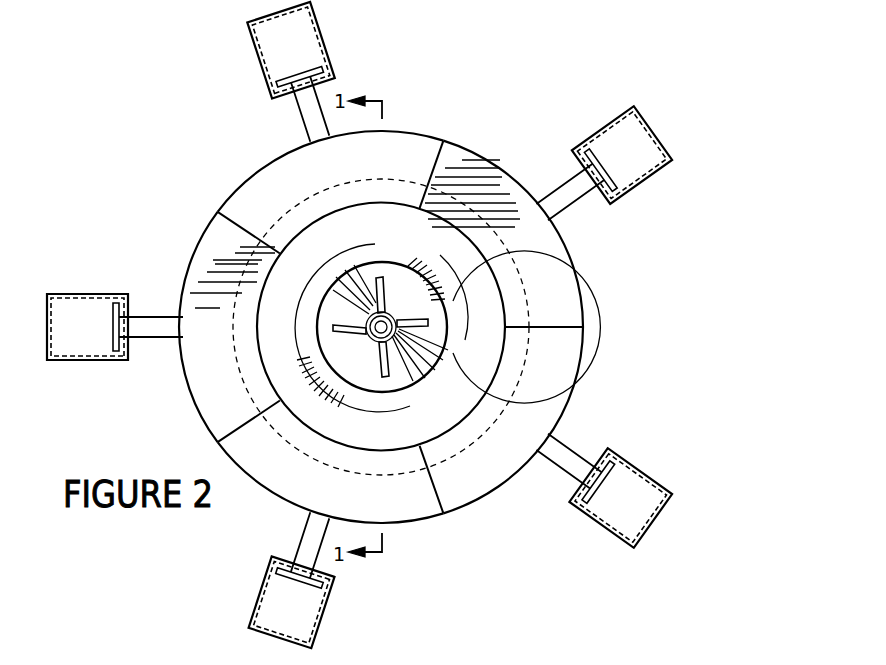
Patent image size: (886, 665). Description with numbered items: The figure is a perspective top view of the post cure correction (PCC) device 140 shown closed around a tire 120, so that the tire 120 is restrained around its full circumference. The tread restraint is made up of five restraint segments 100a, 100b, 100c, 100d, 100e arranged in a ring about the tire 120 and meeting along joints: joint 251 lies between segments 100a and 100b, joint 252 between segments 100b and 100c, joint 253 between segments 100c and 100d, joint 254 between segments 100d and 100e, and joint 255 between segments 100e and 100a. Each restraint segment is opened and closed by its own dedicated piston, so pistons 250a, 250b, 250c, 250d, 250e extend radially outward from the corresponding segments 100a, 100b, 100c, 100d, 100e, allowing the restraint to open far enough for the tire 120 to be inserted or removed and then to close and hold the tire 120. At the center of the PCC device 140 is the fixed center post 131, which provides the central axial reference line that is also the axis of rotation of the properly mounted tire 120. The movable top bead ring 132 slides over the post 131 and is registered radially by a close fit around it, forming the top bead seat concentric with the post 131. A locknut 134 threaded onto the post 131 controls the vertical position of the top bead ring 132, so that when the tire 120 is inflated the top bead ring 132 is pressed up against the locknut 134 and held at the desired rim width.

The post cure correction (PCC) device 140 is at (103, 101).
The restraint segment 100a is at (297, 473).
The restraint segment 100b is at (215, 253).
The restraint segment 100c is at (287, 180).
The restraint segment 100d is at (517, 190).
The restraint segment 100e is at (560, 368).
The tire 120 is at (470, 272).
The center post 131 is at (380, 335).
The top bead ring 132 is at (440, 372).
The locknut 134 is at (396, 323).
The joint 251 is at (237, 430).
The joint 252 is at (247, 227).
The joint 253 is at (438, 158).
The joint 254 is at (560, 333).
The joint 255 is at (440, 513).
The piston 250a is at (300, 600).
The piston 250b is at (87, 318).
The piston 250c is at (277, 52).
The piston 250d is at (630, 137).
The piston 250e is at (615, 507).